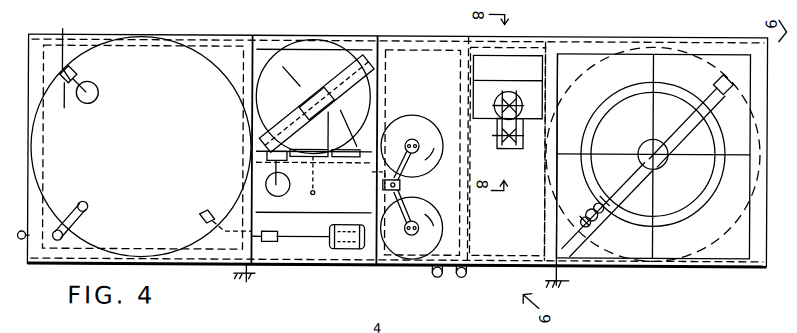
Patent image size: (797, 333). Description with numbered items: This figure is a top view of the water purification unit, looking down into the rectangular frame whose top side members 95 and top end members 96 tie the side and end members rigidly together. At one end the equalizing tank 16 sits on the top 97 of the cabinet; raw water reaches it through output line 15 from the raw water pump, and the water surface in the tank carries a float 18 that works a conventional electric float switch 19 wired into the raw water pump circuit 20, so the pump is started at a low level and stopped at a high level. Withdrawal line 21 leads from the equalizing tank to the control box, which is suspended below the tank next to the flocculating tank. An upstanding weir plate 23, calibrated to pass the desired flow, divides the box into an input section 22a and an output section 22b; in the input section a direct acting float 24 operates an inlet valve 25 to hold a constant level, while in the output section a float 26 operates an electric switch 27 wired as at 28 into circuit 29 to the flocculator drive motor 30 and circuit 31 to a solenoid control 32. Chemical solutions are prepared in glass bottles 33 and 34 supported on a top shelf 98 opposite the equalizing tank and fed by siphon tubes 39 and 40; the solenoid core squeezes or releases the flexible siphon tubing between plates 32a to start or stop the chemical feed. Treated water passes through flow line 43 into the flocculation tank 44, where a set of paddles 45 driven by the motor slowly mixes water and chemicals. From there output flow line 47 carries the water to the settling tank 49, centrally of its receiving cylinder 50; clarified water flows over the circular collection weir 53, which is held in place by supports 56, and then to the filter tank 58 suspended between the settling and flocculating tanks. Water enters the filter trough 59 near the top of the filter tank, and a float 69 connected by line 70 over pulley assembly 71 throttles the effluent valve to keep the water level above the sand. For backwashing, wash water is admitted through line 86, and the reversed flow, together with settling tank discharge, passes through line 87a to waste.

The output line 15 is at (86, 213).
The equalizing tank 16 is at (151, 118).
The float 18 is at (98, 92).
The electric float switch 19 is at (64, 105).
The raw water pump circuit 20 is at (68, 54).
The withdrawal line 21 is at (201, 218).
The input section 22a is at (293, 247).
The output section 22b is at (266, 178).
The weir plate 23 is at (332, 216).
The direct acting float 24 is at (361, 250).
The inlet valve 25 is at (266, 272).
The float 26 is at (288, 185).
The electric switch 27 is at (252, 156).
The wiring 28 is at (309, 143).
The circuit 29 is at (326, 142).
The flocculator drive motor 30 is at (292, 92).
The circuit 31 is at (356, 150).
The solenoid control 32 is at (401, 186).
The plates 32a is at (372, 184).
The glass bottle 33 is at (412, 130).
The glass bottle 34 is at (425, 224).
The siphon tube 39 is at (425, 100).
The siphon tube 40 is at (452, 226).
The flow line 43 is at (316, 190).
The flocculation tank 44 is at (346, 137).
The paddles 45 is at (312, 84).
The output flow line 47 is at (624, 177).
The settling tank 49 is at (716, 248).
The receiving cylinder 50 is at (664, 172).
The circular collection weir 53 is at (712, 186).
The supports 56 is at (628, 153).
The filter tank 58 is at (545, 62).
The filter trough 59 is at (499, 90).
The float 69 is at (503, 92).
The line 70 is at (524, 128).
The pulley assembly 71 is at (500, 145).
The line 86 is at (436, 278).
The line 87a is at (462, 278).
The top side members 95 is at (590, 260).
The top end members 96 is at (756, 242).
The cabinet top 97 is at (232, 80).
The top shelf 98 is at (415, 66).